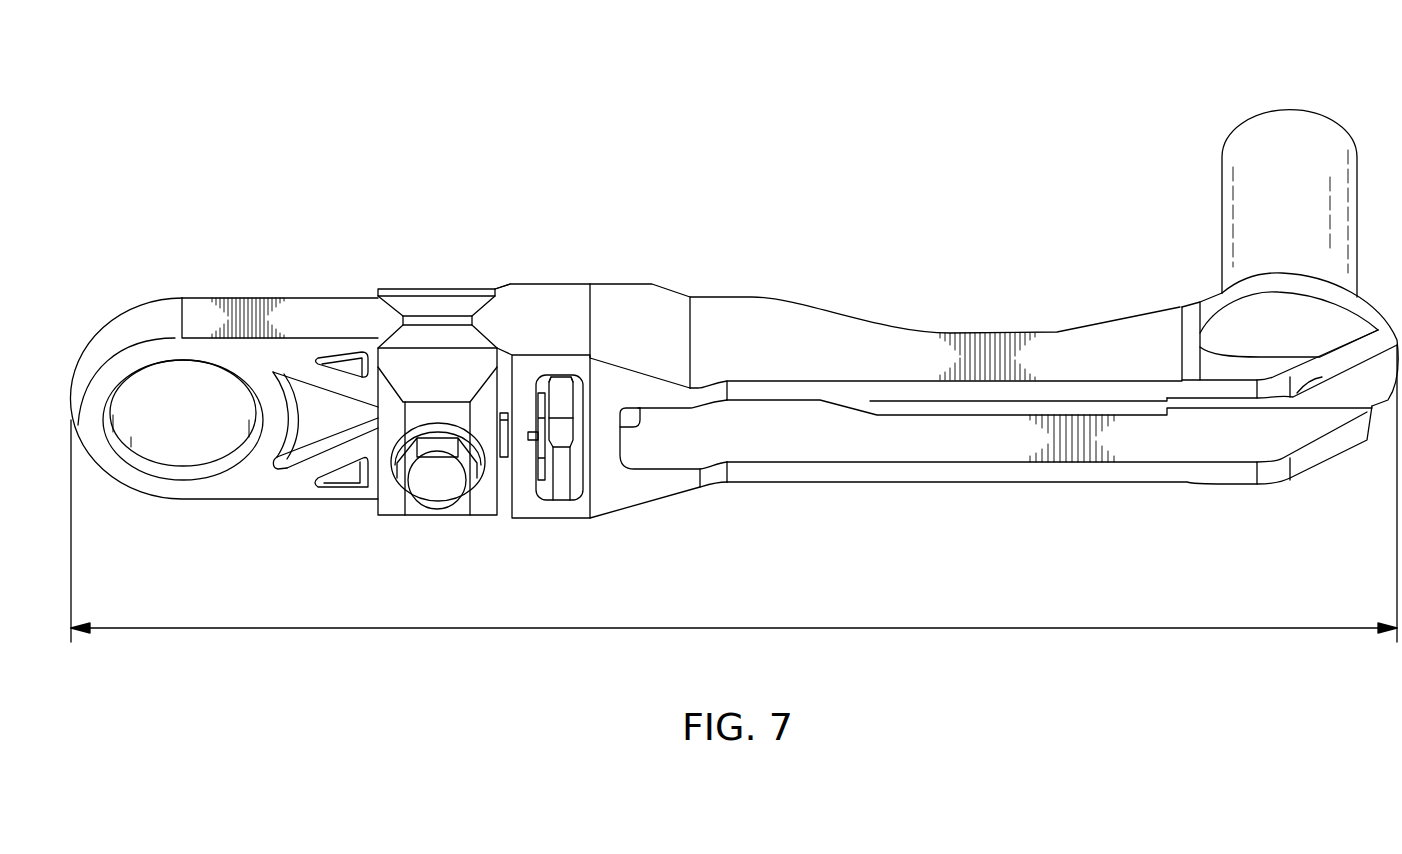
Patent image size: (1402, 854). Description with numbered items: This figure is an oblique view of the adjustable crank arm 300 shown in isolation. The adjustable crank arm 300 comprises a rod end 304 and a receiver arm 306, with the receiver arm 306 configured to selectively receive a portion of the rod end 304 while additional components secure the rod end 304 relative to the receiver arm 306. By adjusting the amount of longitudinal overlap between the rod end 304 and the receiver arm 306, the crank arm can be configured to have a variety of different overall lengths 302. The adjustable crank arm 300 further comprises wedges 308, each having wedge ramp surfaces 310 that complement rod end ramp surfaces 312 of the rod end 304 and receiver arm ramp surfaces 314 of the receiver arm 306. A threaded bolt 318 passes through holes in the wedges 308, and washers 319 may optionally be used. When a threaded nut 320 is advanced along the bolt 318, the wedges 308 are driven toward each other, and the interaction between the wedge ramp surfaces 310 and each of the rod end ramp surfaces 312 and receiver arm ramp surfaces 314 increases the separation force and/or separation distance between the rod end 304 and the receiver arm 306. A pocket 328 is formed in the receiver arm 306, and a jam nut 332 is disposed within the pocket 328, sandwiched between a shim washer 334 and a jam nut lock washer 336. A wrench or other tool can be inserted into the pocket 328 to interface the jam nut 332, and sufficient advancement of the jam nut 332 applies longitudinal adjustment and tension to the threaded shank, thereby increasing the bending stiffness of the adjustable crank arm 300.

The adjustable crank arm 300 is at (386, 116).
The overall length 302 is at (735, 629).
The rod end 304 is at (195, 298).
The receiver arm 306 is at (1057, 331).
The wedges 308 is at (468, 298).
The wedge ramp surfaces 310 is at (392, 306).
The rod end ramp surfaces 312 is at (403, 287).
The receiver arm ramp surfaces 314 is at (508, 282).
The threaded bolt 318 is at (437, 497).
The washers 319 is at (392, 465).
The threaded nut 320 is at (448, 287).
The pocket 328 is at (593, 492).
The jam nut 332 is at (566, 393).
The shim washer 334 is at (584, 410).
The jam nut lock washer 336 is at (578, 478).